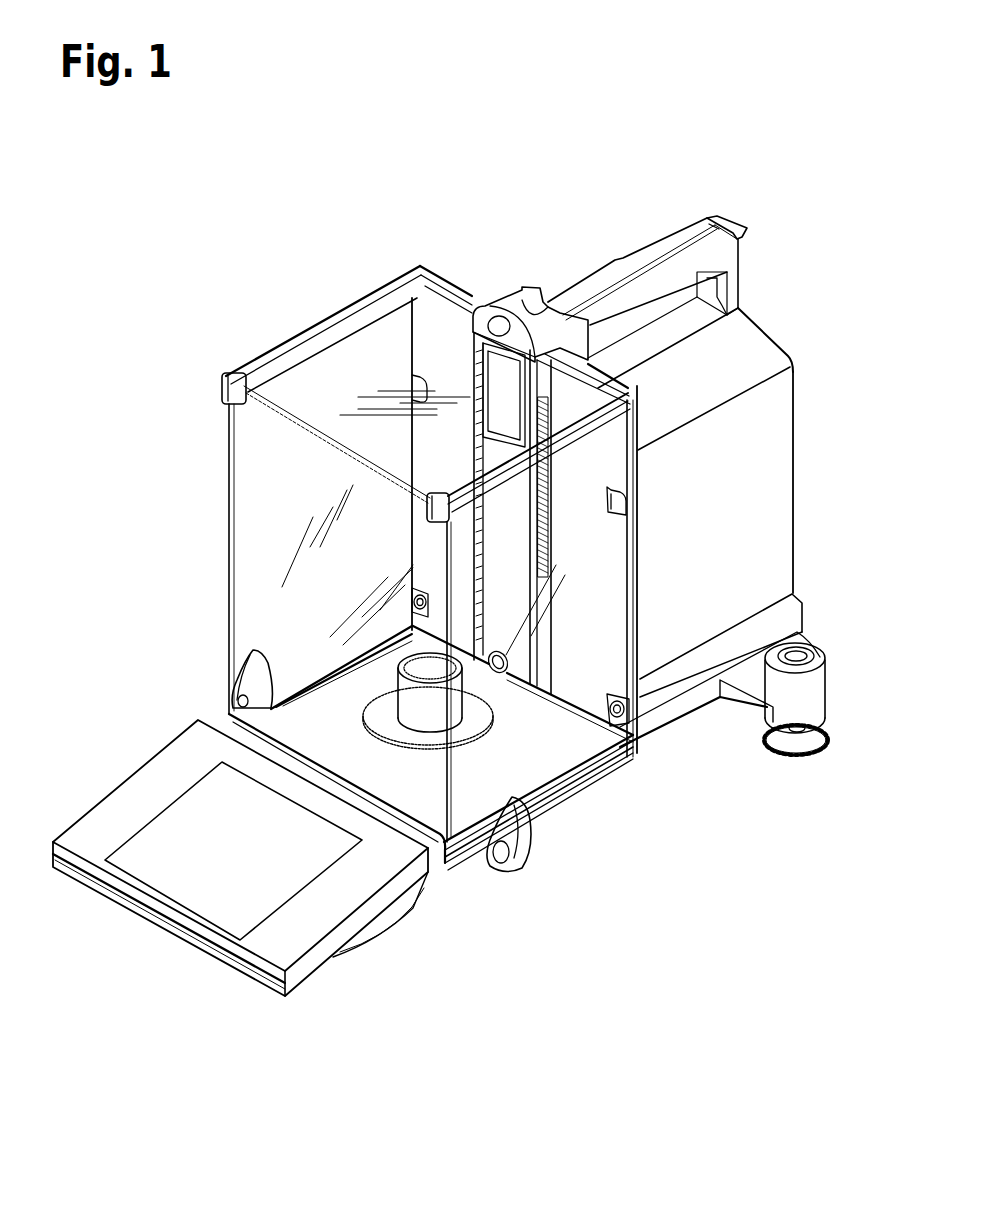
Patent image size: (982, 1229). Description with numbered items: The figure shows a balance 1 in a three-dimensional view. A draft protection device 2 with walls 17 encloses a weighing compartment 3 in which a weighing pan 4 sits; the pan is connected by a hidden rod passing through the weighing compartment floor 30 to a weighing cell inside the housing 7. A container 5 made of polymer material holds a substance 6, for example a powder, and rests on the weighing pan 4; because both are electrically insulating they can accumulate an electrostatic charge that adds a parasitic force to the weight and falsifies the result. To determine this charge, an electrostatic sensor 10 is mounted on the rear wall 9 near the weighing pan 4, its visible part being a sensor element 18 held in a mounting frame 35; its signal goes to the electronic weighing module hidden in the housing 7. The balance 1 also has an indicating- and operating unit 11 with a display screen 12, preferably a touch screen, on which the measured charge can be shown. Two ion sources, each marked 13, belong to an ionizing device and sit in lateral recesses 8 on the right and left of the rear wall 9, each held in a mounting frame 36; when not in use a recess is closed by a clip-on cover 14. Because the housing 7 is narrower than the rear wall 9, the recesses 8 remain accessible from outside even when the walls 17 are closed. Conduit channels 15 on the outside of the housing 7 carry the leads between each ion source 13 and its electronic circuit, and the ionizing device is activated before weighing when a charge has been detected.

The balance 1 is at (407, 220).
The draft protection device 2 is at (203, 448).
The weighing compartment 3 is at (334, 667).
The weighing pan 4 is at (460, 733).
The container 5 is at (470, 697).
The substance 6 is at (509, 672).
The housing 7 is at (767, 420).
The recesses 8 is at (414, 607).
The rear wall 9 is at (540, 600).
The electrostatic sensor 10 is at (492, 632).
The indicating- and operating unit 11 is at (100, 772).
The display screen 12 is at (231, 897).
The ion source 13 is at (416, 600).
The clip-on cover 14 is at (412, 382).
The conduit channels 15 is at (795, 620).
The walls 17 is at (262, 494).
The sensor element 18 is at (540, 687).
The weighing compartment floor 30 is at (336, 741).
The mounting frame 35 is at (634, 752).
The mounting frame 36 is at (415, 593).